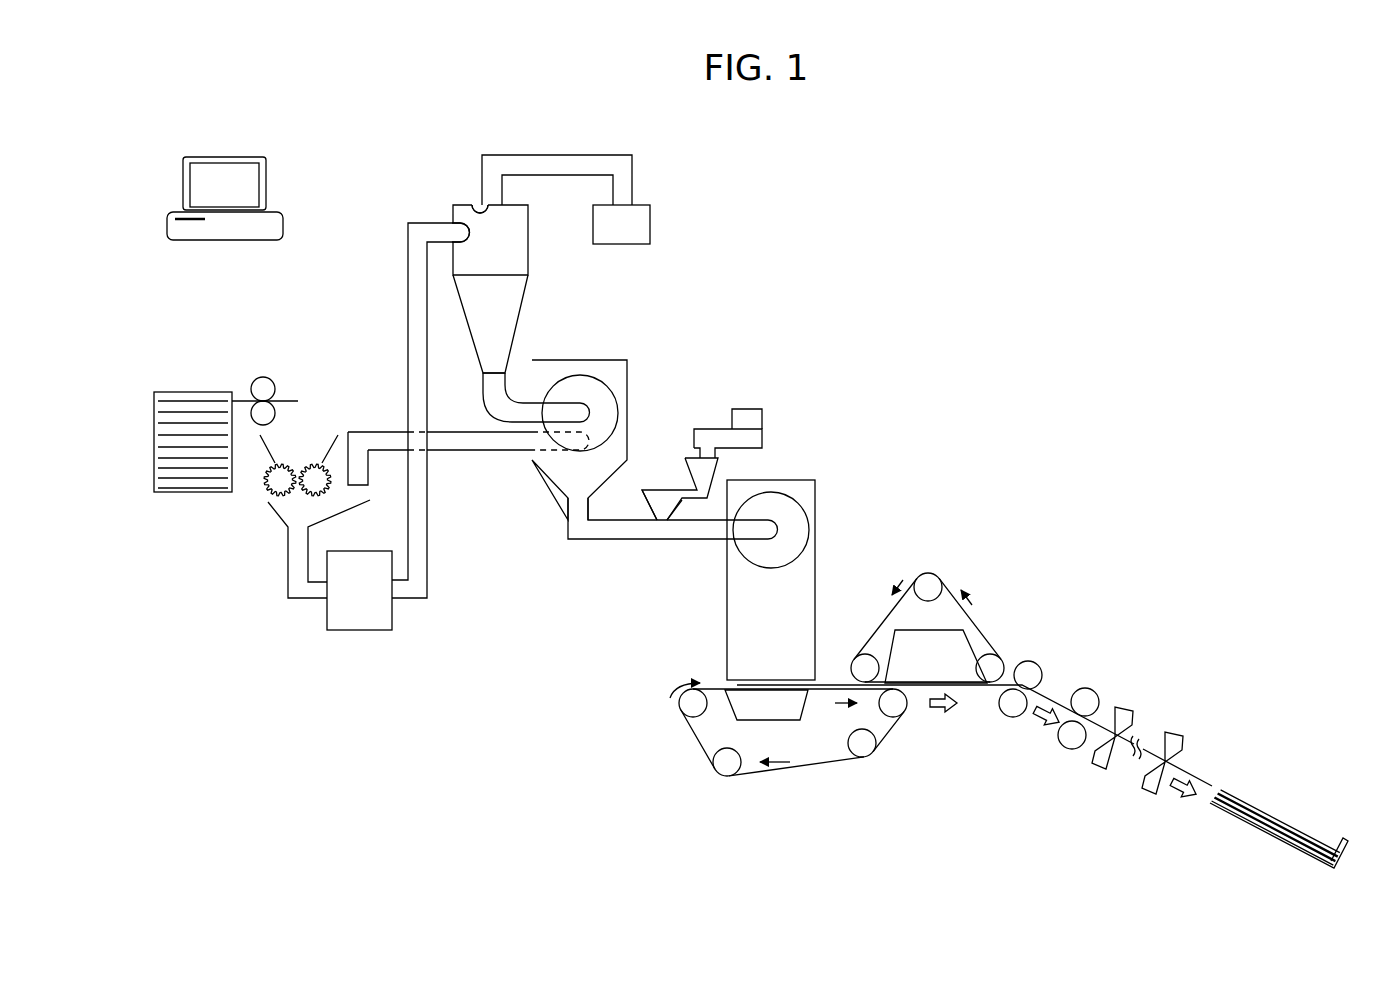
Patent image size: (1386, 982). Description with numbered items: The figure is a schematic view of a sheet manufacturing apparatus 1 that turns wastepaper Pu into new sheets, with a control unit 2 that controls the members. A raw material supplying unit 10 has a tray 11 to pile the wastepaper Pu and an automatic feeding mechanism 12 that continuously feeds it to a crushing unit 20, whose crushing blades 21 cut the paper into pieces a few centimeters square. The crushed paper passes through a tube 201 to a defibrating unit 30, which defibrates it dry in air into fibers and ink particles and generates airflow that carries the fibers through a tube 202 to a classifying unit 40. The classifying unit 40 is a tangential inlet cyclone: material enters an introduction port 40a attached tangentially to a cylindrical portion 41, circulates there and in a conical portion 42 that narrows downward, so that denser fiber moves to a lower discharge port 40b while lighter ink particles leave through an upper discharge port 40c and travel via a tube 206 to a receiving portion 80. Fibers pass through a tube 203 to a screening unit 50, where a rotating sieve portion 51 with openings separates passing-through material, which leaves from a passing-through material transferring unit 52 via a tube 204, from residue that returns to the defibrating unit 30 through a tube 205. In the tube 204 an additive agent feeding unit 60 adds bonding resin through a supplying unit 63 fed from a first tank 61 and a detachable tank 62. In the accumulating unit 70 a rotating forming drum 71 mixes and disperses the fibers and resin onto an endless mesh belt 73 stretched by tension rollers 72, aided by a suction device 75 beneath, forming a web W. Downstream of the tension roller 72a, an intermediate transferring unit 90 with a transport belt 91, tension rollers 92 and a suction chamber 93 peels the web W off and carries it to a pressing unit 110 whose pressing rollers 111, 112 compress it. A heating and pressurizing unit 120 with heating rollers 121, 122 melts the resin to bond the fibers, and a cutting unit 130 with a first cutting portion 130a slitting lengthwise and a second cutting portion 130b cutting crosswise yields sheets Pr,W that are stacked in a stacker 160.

The sheet manufacturing apparatus 1 is at (841, 184).
The control unit 2 is at (276, 160).
The raw material supplying unit 10 is at (193, 441).
The tray 11 is at (173, 498).
The automatic feeding mechanism 12 is at (250, 378).
The crushing unit 20 is at (288, 466).
The crushing blades 21 is at (275, 490).
The defibrating unit 30 is at (366, 548).
The classifying unit 40 is at (528, 266).
The introduction port 40a is at (455, 230).
The lower discharge port 40b is at (505, 376).
The upper discharge port 40c is at (482, 204).
The cylindrical portion 41 is at (523, 243).
The conical portion 42 is at (475, 330).
The screening unit 50 is at (608, 408).
The sieve portion 51 is at (596, 388).
The passing-through material transferring unit 52 is at (558, 494).
The additive agent feeding unit 60 is at (680, 440).
The first tank 61 is at (688, 470).
The tank 62 is at (748, 409).
The supplying unit 63 is at (660, 516).
The accumulating unit 70 is at (792, 553).
The forming drum 71 is at (778, 500).
The tension rollers 72 is at (771, 760).
The tension roller 72a is at (878, 707).
The mesh belt 73 is at (752, 777).
The suction device 75 is at (745, 710).
The receiving portion 80 is at (660, 196).
The intermediate transferring unit 90 is at (943, 602).
The transport belt 91 is at (980, 627).
The tension rollers 92 is at (921, 576).
The suction chamber 93 is at (899, 628).
The pressing unit 110 is at (1037, 656).
The pressing roller 111 is at (1035, 664).
The pressing roller 112 is at (1008, 716).
The heating and pressurizing unit 120 is at (1091, 685).
The heating roller 121 is at (1088, 694).
The heating roller 122 is at (1070, 748).
The cutting unit 130 is at (1180, 705).
The first cutting portion 130a is at (1137, 697).
The second cutting portion 130b is at (1200, 731).
The stacker 160 is at (1236, 826).
The tube 201 is at (288, 578).
The tube 202 is at (408, 258).
The tube 203 is at (508, 420).
The tube 204 is at (580, 542).
The tube 205 is at (460, 455).
The tube 206 is at (572, 163).
The wastepaper Pu is at (213, 498).
The web W is at (822, 684).
The sheet Pr,W is at (1196, 775).